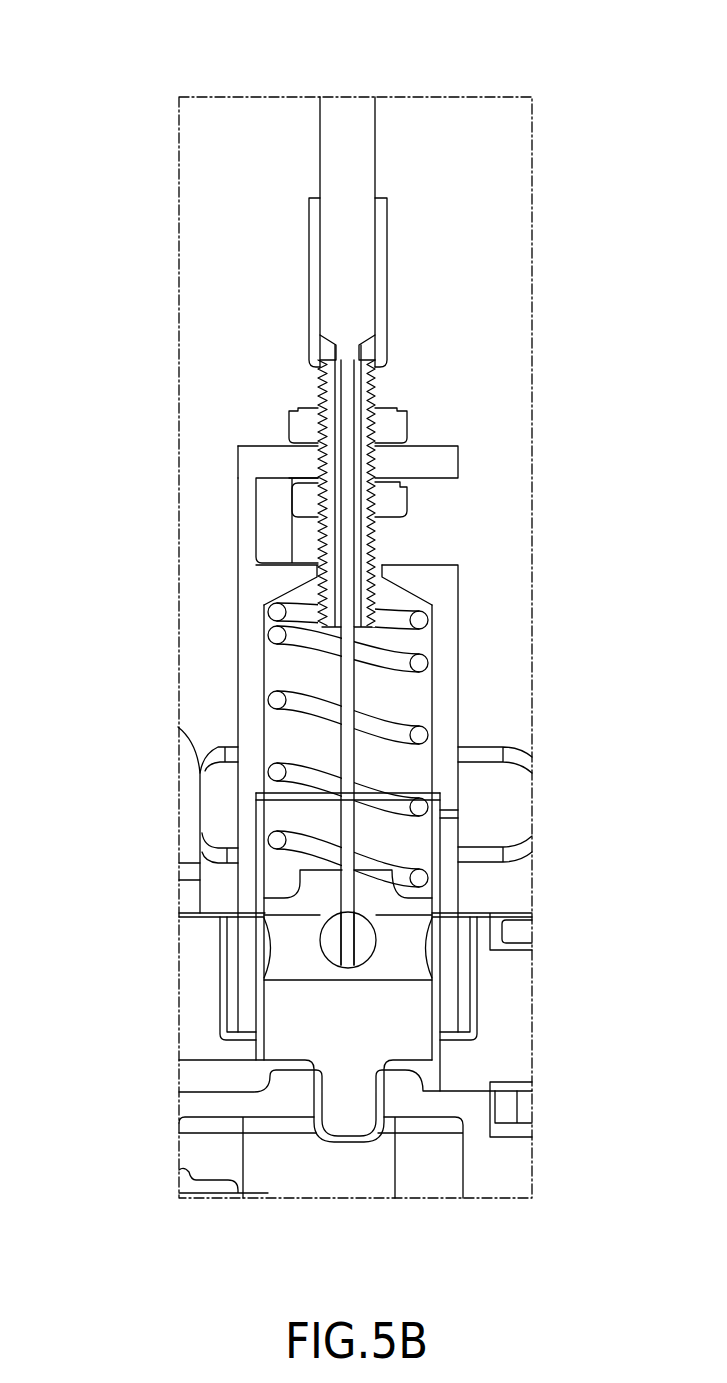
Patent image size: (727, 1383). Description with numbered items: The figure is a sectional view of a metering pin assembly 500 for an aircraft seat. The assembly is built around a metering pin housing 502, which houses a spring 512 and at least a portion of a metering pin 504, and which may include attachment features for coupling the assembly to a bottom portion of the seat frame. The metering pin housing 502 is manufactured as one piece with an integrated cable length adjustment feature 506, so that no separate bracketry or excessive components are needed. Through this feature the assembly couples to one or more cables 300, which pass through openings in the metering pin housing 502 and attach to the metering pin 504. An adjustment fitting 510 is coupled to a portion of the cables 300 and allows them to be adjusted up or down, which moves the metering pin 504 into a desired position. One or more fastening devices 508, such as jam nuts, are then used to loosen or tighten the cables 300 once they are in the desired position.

The metering pin assembly 500 is at (148, 51).
The cables 300 is at (367, 183).
The metering pin housing 502 is at (247, 580).
The metering pin 504 is at (300, 978).
The cable length adjustment feature 506 is at (247, 462).
The fastening devices 508 is at (407, 428).
The adjustment fitting 510 is at (366, 547).
The spring 512 is at (393, 723).